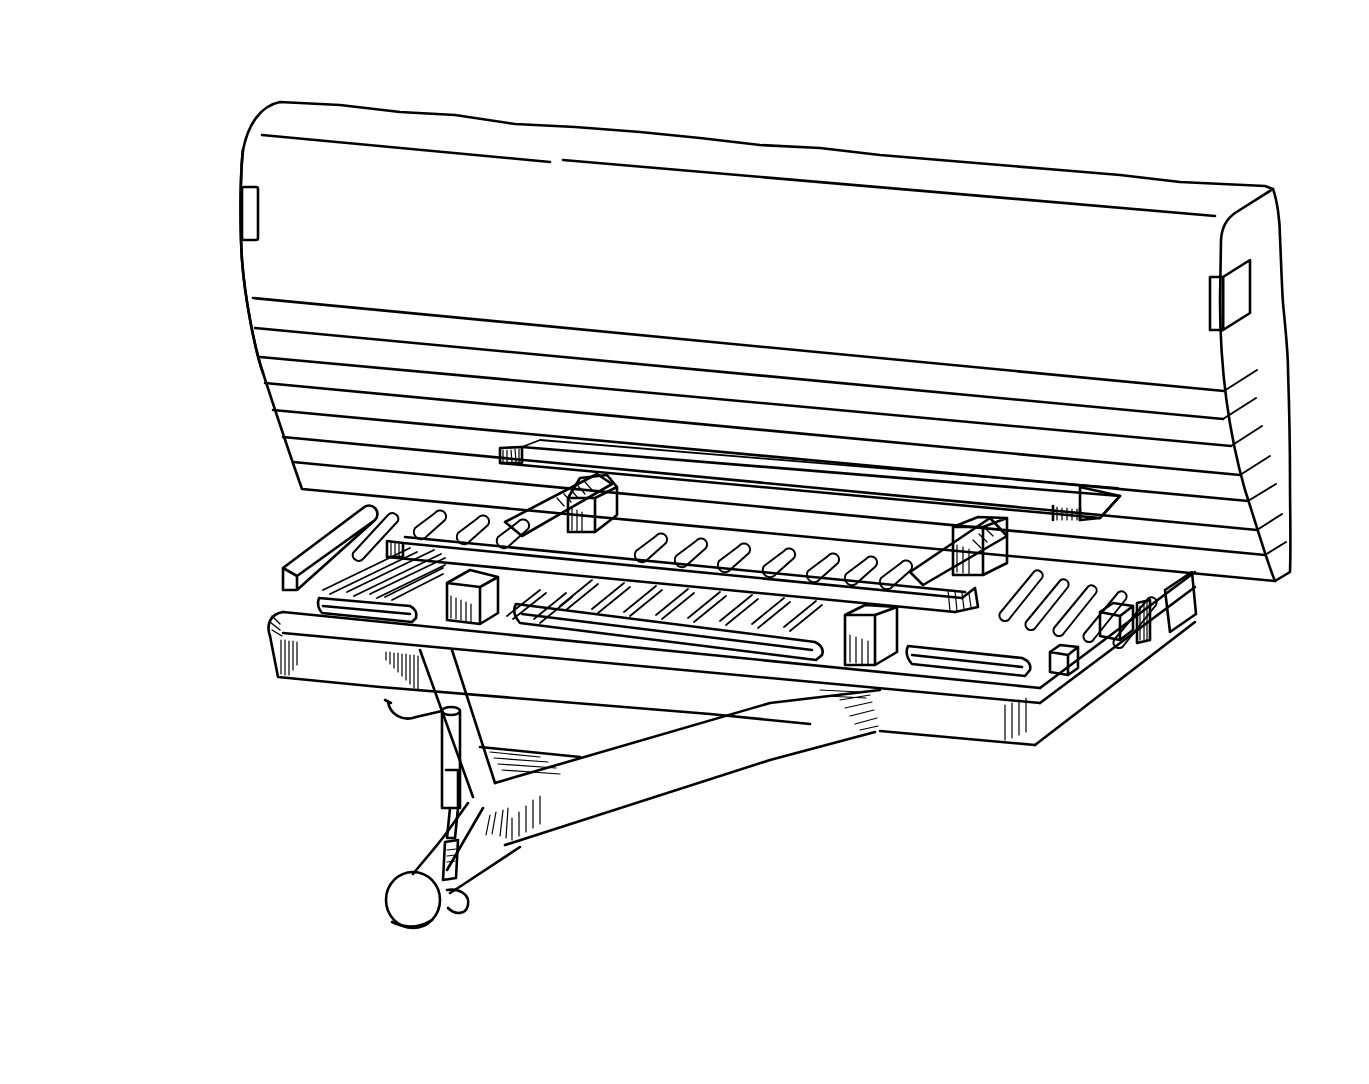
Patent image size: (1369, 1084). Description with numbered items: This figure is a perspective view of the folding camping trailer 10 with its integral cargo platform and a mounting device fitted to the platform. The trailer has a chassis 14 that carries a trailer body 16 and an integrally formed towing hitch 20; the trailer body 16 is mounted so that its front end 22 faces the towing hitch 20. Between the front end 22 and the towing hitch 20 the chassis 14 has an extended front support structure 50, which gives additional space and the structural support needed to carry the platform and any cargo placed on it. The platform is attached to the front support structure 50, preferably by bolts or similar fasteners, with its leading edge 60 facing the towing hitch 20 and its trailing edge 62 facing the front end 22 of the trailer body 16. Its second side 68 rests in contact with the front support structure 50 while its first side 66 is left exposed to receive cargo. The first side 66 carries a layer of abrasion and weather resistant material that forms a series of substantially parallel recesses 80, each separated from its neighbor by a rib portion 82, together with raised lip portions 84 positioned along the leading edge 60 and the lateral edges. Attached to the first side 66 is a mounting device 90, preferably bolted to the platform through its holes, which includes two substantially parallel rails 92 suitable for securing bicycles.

The folding camping trailer 10 is at (196, 183).
The chassis 14 is at (724, 760).
The trailer body 16 is at (244, 276).
The towing hitch 20 is at (465, 878).
The front end 22 is at (755, 309).
The front support structure 50 is at (1060, 703).
The leading edge 60 is at (362, 632).
The trailing edge 62 is at (377, 504).
The first side 66 is at (278, 596).
The second side 68 is at (1192, 645).
The recesses 80 is at (1077, 628).
The rib portion 82 is at (1117, 624).
The raised lip portions 84 is at (968, 640).
The mounting device 90 is at (1092, 475).
The rails 92 is at (540, 458).